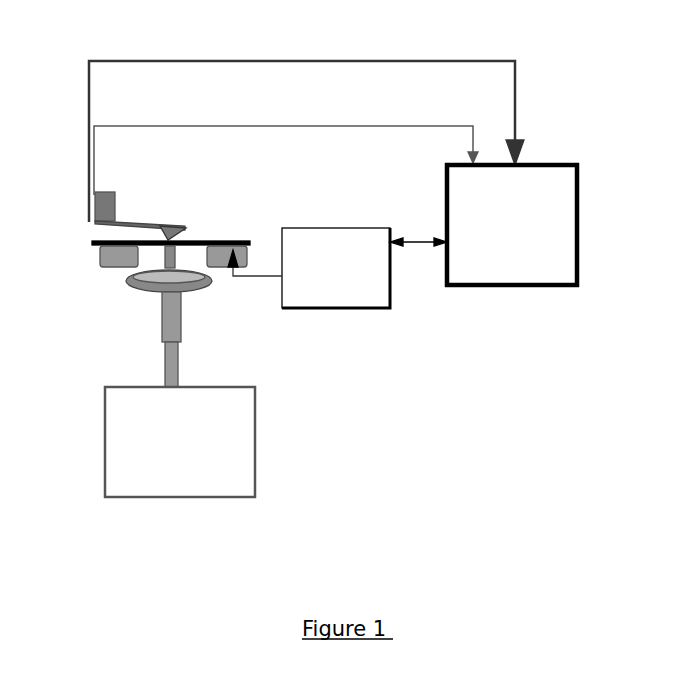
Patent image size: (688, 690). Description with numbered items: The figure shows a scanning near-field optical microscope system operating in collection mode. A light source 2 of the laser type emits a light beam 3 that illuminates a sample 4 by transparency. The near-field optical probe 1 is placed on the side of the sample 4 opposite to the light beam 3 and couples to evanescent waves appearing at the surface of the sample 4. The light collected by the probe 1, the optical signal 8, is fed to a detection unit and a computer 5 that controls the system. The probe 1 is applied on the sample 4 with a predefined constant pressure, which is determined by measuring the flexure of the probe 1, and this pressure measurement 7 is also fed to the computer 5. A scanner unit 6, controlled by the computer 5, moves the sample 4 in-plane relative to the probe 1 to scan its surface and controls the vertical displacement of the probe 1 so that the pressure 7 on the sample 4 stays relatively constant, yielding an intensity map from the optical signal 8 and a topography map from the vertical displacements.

The near-field optical probe 1 is at (172, 220).
The light source 2 is at (105, 465).
The light beam 3 is at (163, 318).
The sample 4 is at (95, 243).
The computer 5 is at (578, 208).
The scanner unit 6 is at (343, 308).
The pressure measurement 7 is at (215, 126).
The optical signal 8 is at (303, 61).